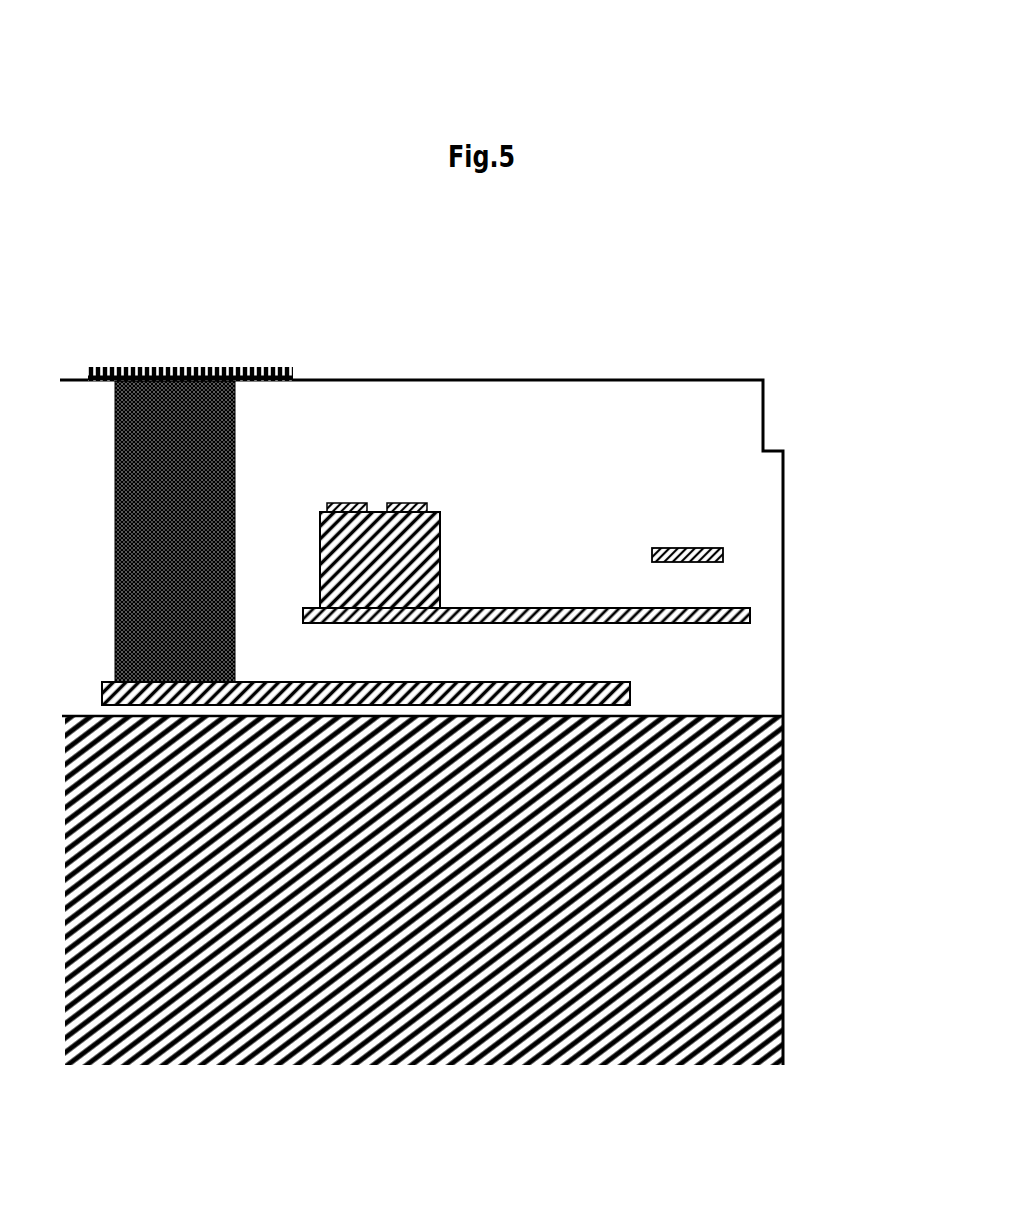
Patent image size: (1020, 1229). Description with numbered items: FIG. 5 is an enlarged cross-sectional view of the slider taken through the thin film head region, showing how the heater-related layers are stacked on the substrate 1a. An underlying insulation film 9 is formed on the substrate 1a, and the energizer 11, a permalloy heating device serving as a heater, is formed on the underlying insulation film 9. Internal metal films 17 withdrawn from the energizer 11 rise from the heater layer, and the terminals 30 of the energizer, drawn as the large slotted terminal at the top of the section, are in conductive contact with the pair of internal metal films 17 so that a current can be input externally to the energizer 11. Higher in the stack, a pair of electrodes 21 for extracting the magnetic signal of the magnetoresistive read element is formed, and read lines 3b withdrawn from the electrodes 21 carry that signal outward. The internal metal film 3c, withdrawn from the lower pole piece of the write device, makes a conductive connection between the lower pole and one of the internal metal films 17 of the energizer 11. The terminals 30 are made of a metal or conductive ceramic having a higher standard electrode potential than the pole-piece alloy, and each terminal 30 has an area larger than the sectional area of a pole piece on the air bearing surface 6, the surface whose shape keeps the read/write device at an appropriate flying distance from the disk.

The terminals of the energizer 30 is at (200, 367).
The internal metal films 17 is at (236, 477).
The read lines 3b is at (345, 503).
The internal metal film 3c is at (723, 555).
The electrodes 21 is at (750, 608).
The energizer 11 is at (630, 690).
The underlying insulation film 9 is at (777, 705).
The air bearing surface 6 is at (783, 845).
The substrate 1a is at (170, 1005).